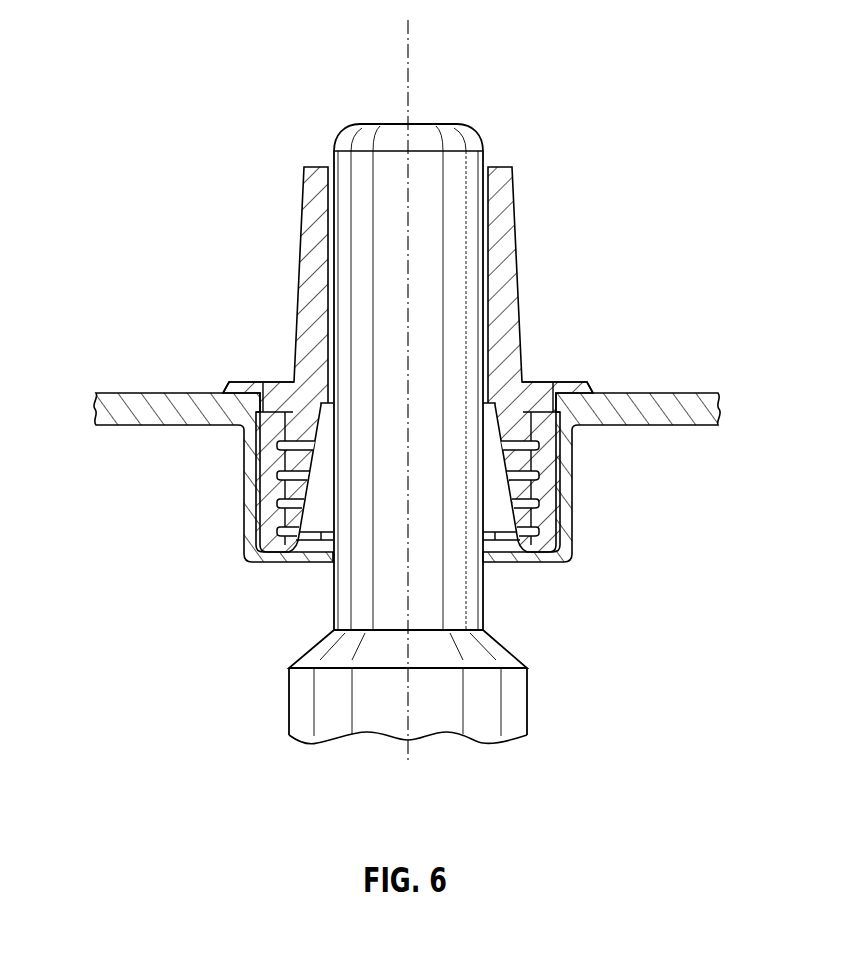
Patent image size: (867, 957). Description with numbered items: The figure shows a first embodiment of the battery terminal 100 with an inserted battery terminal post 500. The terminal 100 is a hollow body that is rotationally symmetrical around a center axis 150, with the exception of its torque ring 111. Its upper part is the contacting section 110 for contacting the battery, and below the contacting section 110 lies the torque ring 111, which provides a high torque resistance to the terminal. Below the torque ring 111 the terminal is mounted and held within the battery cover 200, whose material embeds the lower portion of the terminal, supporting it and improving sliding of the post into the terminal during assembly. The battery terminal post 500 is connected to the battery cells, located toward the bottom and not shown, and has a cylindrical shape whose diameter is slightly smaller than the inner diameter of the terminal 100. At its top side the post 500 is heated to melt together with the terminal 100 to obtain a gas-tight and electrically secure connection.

The battery terminal 100 is at (550, 162).
The contacting section 110 is at (518, 273).
The torque ring 111 is at (538, 381).
The center axis 150 is at (407, 61).
The battery cover 200 is at (655, 392).
The battery terminal post 500 is at (452, 596).